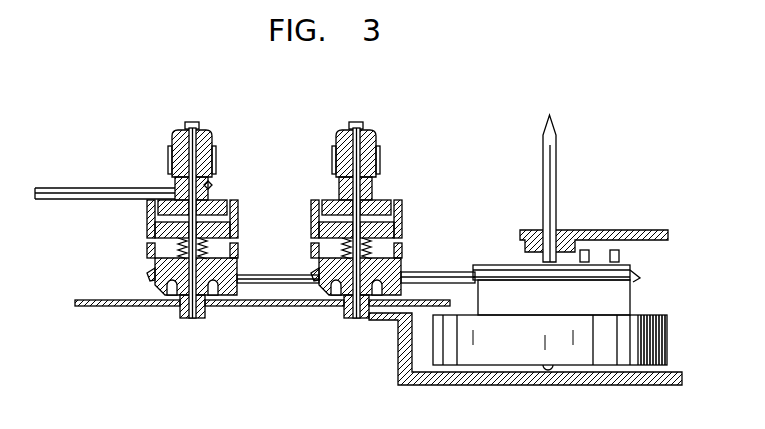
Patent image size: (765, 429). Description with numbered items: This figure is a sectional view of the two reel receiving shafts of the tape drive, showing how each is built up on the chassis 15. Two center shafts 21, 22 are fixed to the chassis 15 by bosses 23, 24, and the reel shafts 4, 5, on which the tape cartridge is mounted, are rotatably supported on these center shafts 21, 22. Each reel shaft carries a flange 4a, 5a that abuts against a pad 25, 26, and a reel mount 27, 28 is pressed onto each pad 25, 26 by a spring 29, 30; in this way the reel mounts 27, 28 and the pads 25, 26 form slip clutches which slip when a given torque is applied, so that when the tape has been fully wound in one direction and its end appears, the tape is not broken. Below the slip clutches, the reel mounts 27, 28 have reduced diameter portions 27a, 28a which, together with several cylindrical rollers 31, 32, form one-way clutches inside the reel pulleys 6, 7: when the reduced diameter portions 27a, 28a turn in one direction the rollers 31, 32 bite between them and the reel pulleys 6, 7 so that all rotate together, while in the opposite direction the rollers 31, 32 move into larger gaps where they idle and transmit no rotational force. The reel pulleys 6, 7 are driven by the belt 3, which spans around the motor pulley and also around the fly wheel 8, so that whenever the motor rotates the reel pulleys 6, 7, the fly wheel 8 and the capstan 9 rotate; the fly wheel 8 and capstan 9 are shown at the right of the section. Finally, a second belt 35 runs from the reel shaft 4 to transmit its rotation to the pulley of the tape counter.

The belt 3 is at (422, 273).
The reel shaft 4 is at (173, 140).
The flange 4a is at (177, 192).
The reel shaft 5 is at (377, 142).
The flange 5a is at (338, 200).
The reel shaft pulley 6 is at (148, 255).
The reel shaft pulley 7 is at (325, 290).
The fly wheel 8 is at (473, 360).
The capstan 9 is at (543, 172).
The chassis 15 is at (136, 306).
The center shaft 21 is at (197, 121).
The center shaft 22 is at (359, 121).
The boss 23 is at (186, 315).
The boss 24 is at (347, 318).
The pad 25 is at (209, 210).
The pad 26 is at (373, 212).
The reel mount 27 is at (148, 212).
The reduced diameter portion 27a is at (165, 240).
The reel mount 28 is at (311, 210).
The reduced diameter portion 28a is at (325, 242).
The spring 29 is at (215, 285).
The spring 30 is at (372, 306).
The cylindrical roller 31 is at (250, 279).
The cylindrical roller 32 is at (392, 250).
The belt 35 is at (72, 199).